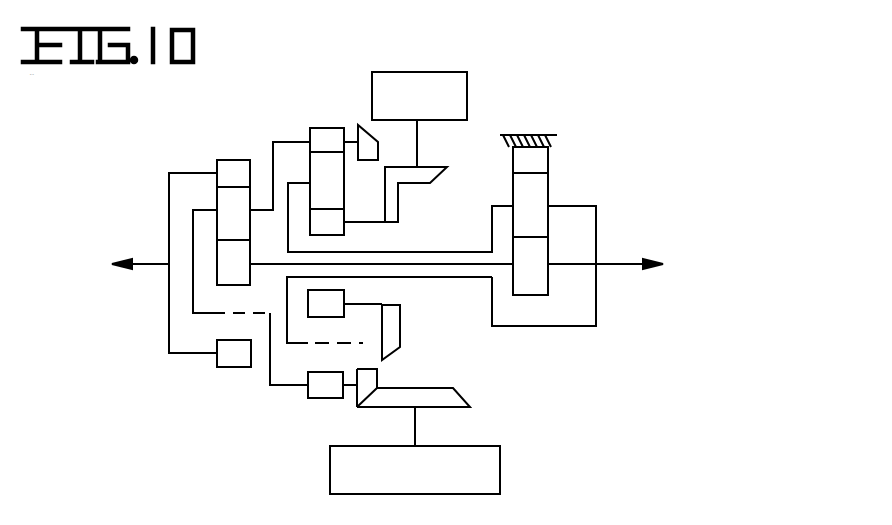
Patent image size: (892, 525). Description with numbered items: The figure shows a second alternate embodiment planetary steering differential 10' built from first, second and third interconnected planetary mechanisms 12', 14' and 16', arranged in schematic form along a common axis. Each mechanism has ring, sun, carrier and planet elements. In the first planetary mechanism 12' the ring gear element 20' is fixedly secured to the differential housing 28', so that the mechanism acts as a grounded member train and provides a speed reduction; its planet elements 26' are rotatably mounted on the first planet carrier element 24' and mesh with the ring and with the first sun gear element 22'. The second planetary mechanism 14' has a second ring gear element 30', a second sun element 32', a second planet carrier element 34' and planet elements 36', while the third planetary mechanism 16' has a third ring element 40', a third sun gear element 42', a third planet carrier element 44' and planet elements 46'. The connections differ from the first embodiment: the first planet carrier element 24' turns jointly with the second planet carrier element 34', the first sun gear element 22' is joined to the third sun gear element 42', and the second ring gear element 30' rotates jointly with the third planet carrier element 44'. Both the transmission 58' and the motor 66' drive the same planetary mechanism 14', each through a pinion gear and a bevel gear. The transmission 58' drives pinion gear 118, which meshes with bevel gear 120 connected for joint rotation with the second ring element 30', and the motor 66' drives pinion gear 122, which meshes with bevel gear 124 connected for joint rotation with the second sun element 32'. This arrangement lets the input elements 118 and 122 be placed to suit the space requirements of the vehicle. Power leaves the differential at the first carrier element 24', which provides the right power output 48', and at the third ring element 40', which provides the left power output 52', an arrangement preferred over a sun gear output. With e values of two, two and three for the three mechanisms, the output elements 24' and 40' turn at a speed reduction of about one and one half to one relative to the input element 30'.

The planetary steering differential 10' is at (633, 399).
The first planetary mechanism 12' is at (560, 115).
The second planetary mechanism 14' is at (327, 151).
The third planetary mechanism 16' is at (227, 192).
The ring gear element 20' is at (561, 221).
The sun gear element 22' is at (547, 279).
The planet carrier element 24' is at (548, 265).
The planet element 26' is at (561, 205).
The differential housing 28' is at (527, 116).
The second ring gear element 30' is at (284, 153).
The second sun element 32' is at (351, 232).
The second planet carrier element 34' is at (378, 186).
The planet element 36' is at (357, 167).
The third ring element 40' is at (195, 165).
The third sun gear element 42' is at (244, 278).
The third planet carrier element 44' is at (236, 298).
The planet element 46' is at (183, 267).
The right power output 48' is at (605, 290).
The left power output 52' is at (136, 288).
The transmission 58' is at (379, 470).
The motor 66' is at (419, 95).
The pinion gear 118 is at (452, 398).
The bevel gear 120 is at (370, 378).
The pinion gear 122 is at (423, 173).
The bevel gear 124 is at (397, 200).